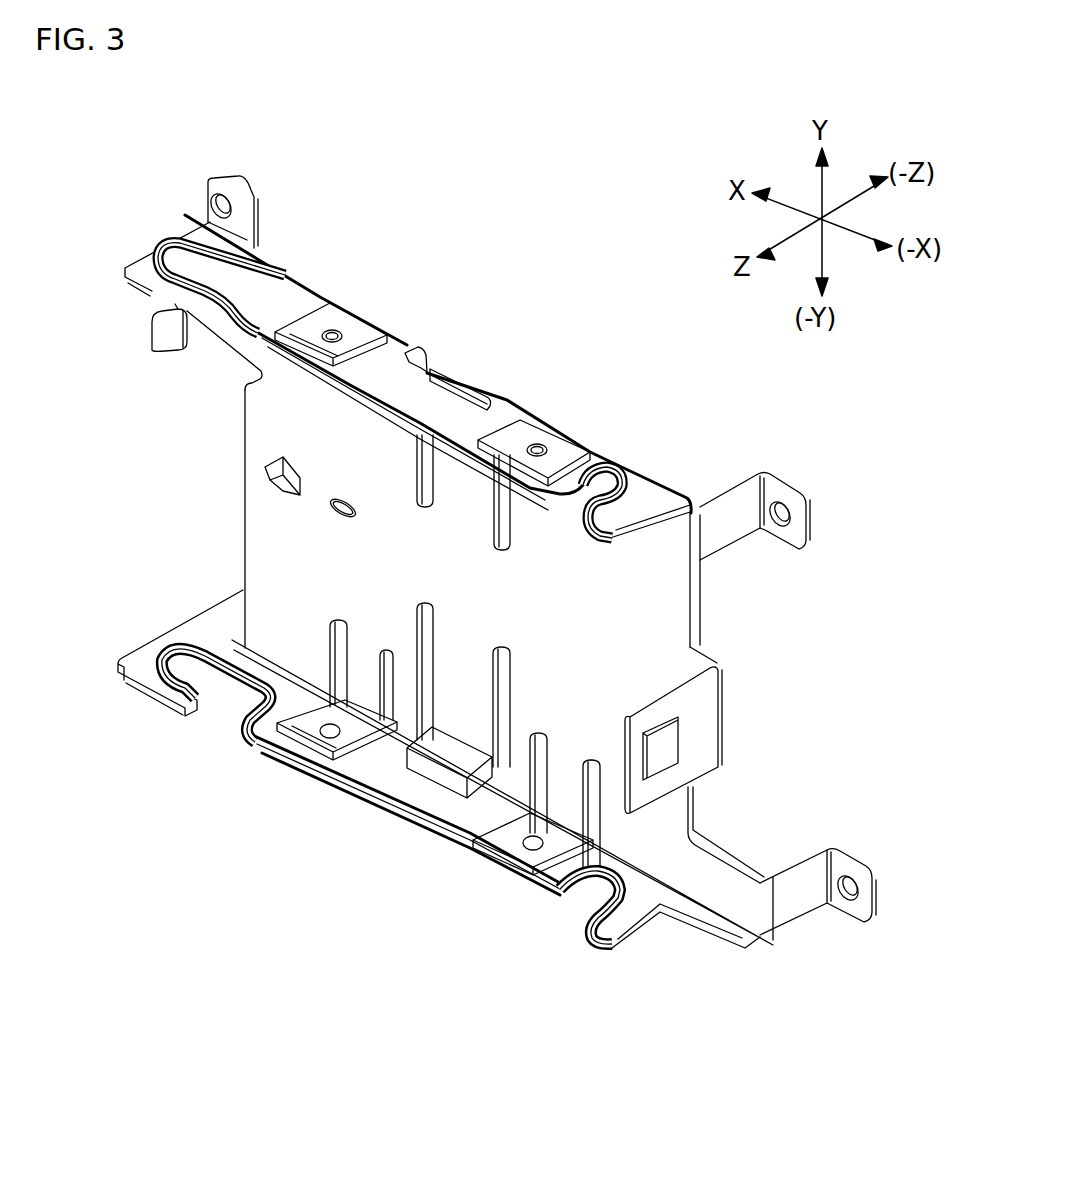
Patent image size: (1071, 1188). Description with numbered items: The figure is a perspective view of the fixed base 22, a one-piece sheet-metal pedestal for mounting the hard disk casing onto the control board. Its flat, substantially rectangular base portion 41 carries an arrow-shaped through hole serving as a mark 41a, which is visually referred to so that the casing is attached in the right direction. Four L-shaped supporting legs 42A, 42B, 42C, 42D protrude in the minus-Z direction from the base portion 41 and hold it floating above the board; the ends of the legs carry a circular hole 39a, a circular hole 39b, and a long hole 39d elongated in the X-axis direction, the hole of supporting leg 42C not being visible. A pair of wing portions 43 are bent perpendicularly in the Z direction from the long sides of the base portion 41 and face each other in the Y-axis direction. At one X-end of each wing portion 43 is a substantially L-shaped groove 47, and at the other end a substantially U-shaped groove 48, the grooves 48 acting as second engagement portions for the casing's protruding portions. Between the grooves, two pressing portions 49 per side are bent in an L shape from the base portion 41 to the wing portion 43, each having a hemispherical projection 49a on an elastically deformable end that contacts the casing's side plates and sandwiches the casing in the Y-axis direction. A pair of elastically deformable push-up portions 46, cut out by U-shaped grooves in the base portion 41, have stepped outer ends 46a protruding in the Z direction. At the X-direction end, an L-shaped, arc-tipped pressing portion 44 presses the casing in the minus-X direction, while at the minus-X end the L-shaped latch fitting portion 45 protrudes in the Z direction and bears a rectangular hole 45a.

The fixed base 22 is at (570, 323).
The circular hole 39a is at (213, 207).
The circular hole 39b is at (776, 505).
The long hole 39d is at (846, 880).
The base portion 41 is at (310, 558).
The mark 41a is at (270, 478).
The supporting leg 42A is at (225, 215).
The supporting leg 42B is at (761, 506).
The supporting leg 42C is at (232, 606).
The supporting leg 42D is at (829, 885).
The wing portion 43 is at (390, 377).
The pressing portion 44 is at (166, 350).
The latch fitting portion 45 is at (719, 740).
The hole 45a is at (680, 746).
The push-up portion 46 is at (453, 475).
The outer end 46a is at (455, 378).
The groove 47 is at (178, 262).
The groove 48 is at (612, 464).
The pressing portion 49 is at (406, 619).
The projection 49a is at (328, 726).